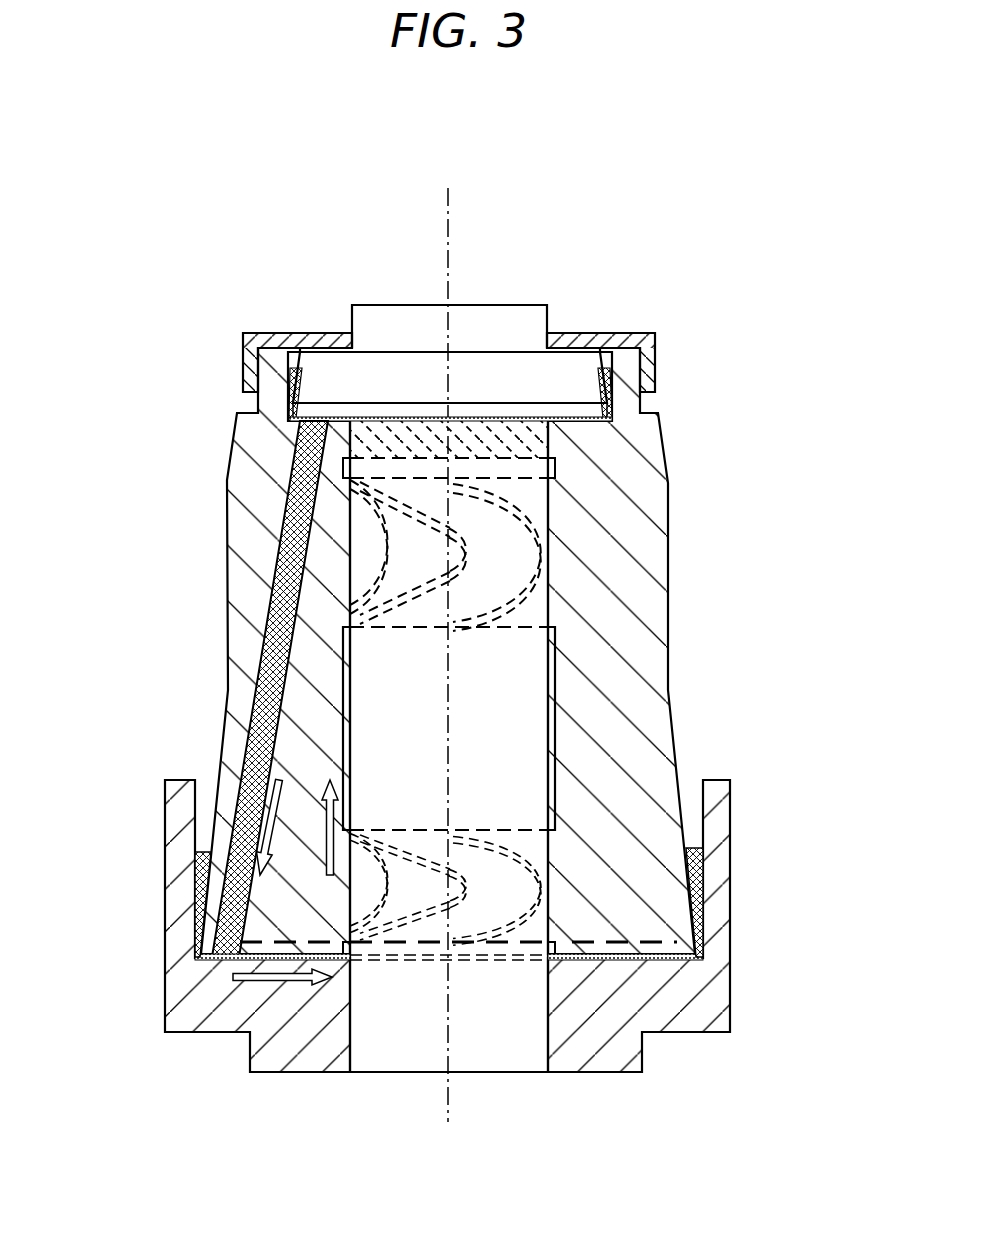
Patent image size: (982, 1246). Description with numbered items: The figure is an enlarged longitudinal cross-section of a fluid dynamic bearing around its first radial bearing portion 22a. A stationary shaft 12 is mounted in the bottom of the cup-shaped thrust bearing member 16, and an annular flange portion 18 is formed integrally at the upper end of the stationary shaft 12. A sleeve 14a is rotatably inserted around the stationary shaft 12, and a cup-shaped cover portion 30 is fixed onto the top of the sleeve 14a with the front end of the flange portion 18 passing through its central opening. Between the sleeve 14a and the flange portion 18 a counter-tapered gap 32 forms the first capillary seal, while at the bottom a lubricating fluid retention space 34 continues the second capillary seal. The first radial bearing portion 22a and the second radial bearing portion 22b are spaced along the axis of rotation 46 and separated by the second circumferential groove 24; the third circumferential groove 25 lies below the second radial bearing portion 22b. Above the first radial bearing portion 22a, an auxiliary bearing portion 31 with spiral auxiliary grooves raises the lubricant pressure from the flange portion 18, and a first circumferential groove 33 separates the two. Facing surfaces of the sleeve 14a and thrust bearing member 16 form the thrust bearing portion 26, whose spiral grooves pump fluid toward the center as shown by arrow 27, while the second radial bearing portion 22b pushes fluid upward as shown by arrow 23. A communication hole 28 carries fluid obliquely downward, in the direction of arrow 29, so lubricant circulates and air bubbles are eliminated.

The axis of rotation 46 is at (448, 207).
The auxiliary bearing portion 31 is at (393, 418).
The flange portion 18 is at (502, 378).
The cover portion 30 is at (633, 333).
The gap 32 is at (303, 350).
The first circumferential groove 33 is at (553, 470).
The sleeve 14a is at (652, 558).
The communication hole 28 is at (295, 525).
The second circumferential groove 24 is at (343, 677).
The arrow 29 is at (265, 768).
The lubricating fluid retention space 34 is at (205, 810).
The arrow 23 is at (347, 787).
The first radial bearing portion 22a is at (405, 567).
The second radial bearing portion 22b is at (493, 870).
The thrust bearing portion 26 is at (658, 940).
The thrust bearing member 16 is at (713, 1000).
The arrow 27 is at (291, 985).
The stationary shaft 12 is at (397, 1020).
The third circumferential groove 25 is at (572, 960).